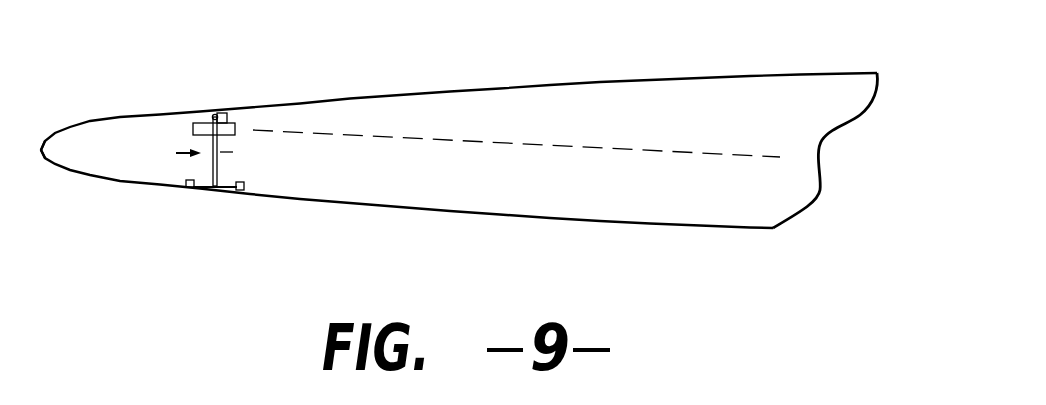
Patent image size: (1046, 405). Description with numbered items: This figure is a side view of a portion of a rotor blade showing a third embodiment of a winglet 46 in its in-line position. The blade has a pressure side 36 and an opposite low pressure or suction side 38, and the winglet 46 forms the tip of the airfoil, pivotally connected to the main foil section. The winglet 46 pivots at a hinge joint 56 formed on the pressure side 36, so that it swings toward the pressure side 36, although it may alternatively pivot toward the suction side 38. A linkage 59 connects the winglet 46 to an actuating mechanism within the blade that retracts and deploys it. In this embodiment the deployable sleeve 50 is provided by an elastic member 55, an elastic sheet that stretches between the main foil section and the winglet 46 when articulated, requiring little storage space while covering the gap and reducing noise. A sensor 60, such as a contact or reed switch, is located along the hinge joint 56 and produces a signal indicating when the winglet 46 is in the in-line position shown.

The pressure side 36 is at (692, 75).
The suction side 38 is at (615, 223).
The winglet 46 is at (115, 133).
The deployable sleeve 50 is at (170, 157).
The elastic member 55 is at (237, 155).
The hinge joint 56 is at (208, 112).
The linkage 59 is at (707, 153).
The sensor 60 is at (227, 112).